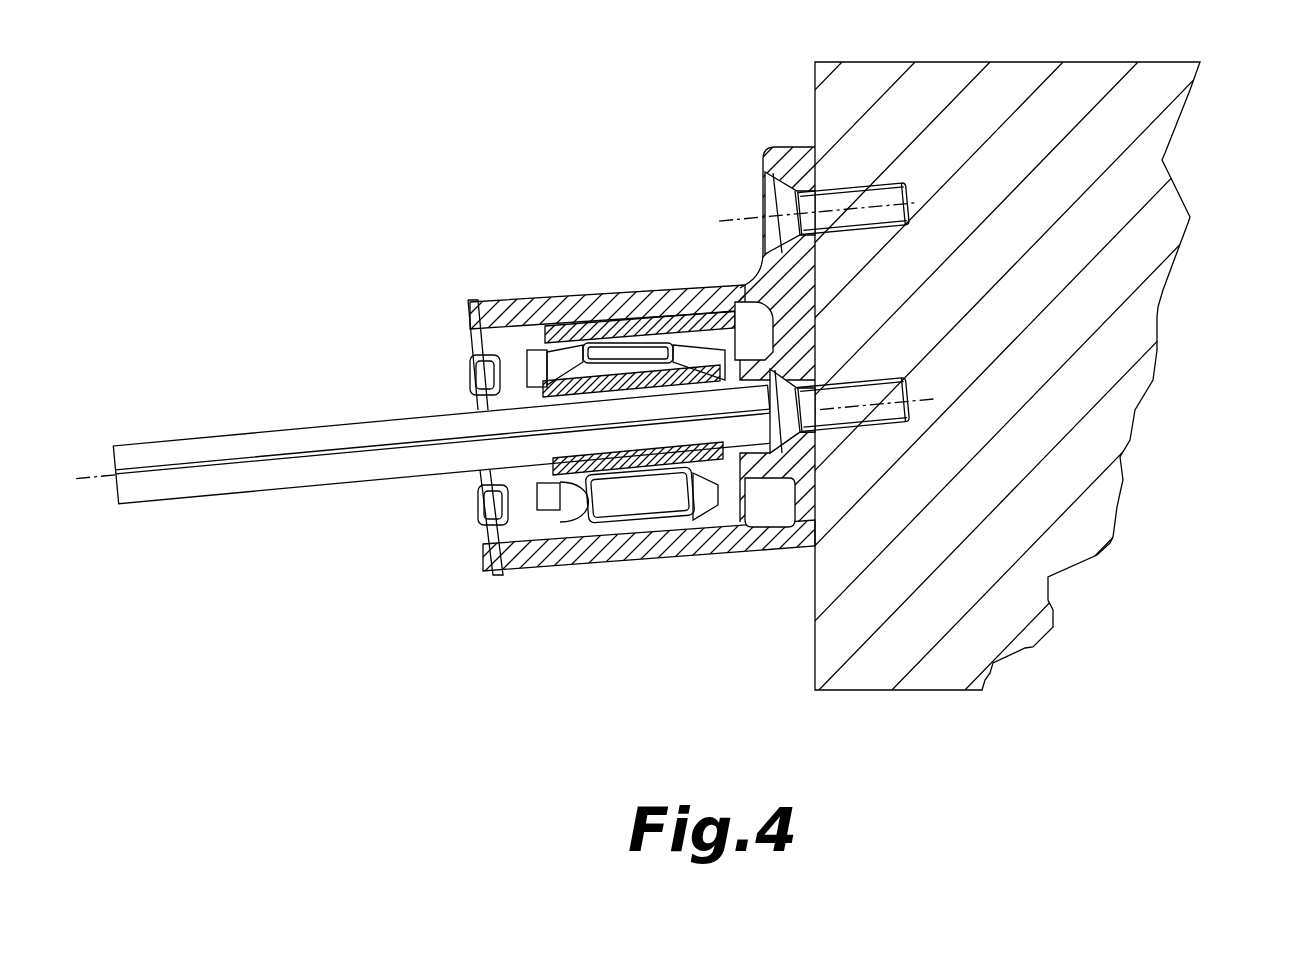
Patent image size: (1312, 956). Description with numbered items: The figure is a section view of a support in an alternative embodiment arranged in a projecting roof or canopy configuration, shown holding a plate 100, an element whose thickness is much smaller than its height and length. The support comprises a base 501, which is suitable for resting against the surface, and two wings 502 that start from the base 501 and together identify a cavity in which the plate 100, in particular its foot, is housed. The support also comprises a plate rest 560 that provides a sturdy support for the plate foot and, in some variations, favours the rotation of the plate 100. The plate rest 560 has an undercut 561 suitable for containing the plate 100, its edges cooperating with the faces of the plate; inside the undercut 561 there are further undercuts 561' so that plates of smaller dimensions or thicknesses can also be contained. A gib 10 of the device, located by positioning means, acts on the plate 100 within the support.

The gib 10 is at (522, 350).
The plate 100 is at (278, 473).
The base 501 is at (808, 268).
The wings 502 is at (597, 308).
The plate rest 560 is at (766, 378).
The undercut 561 is at (778, 215).
The further undercuts 561' is at (982, 495).